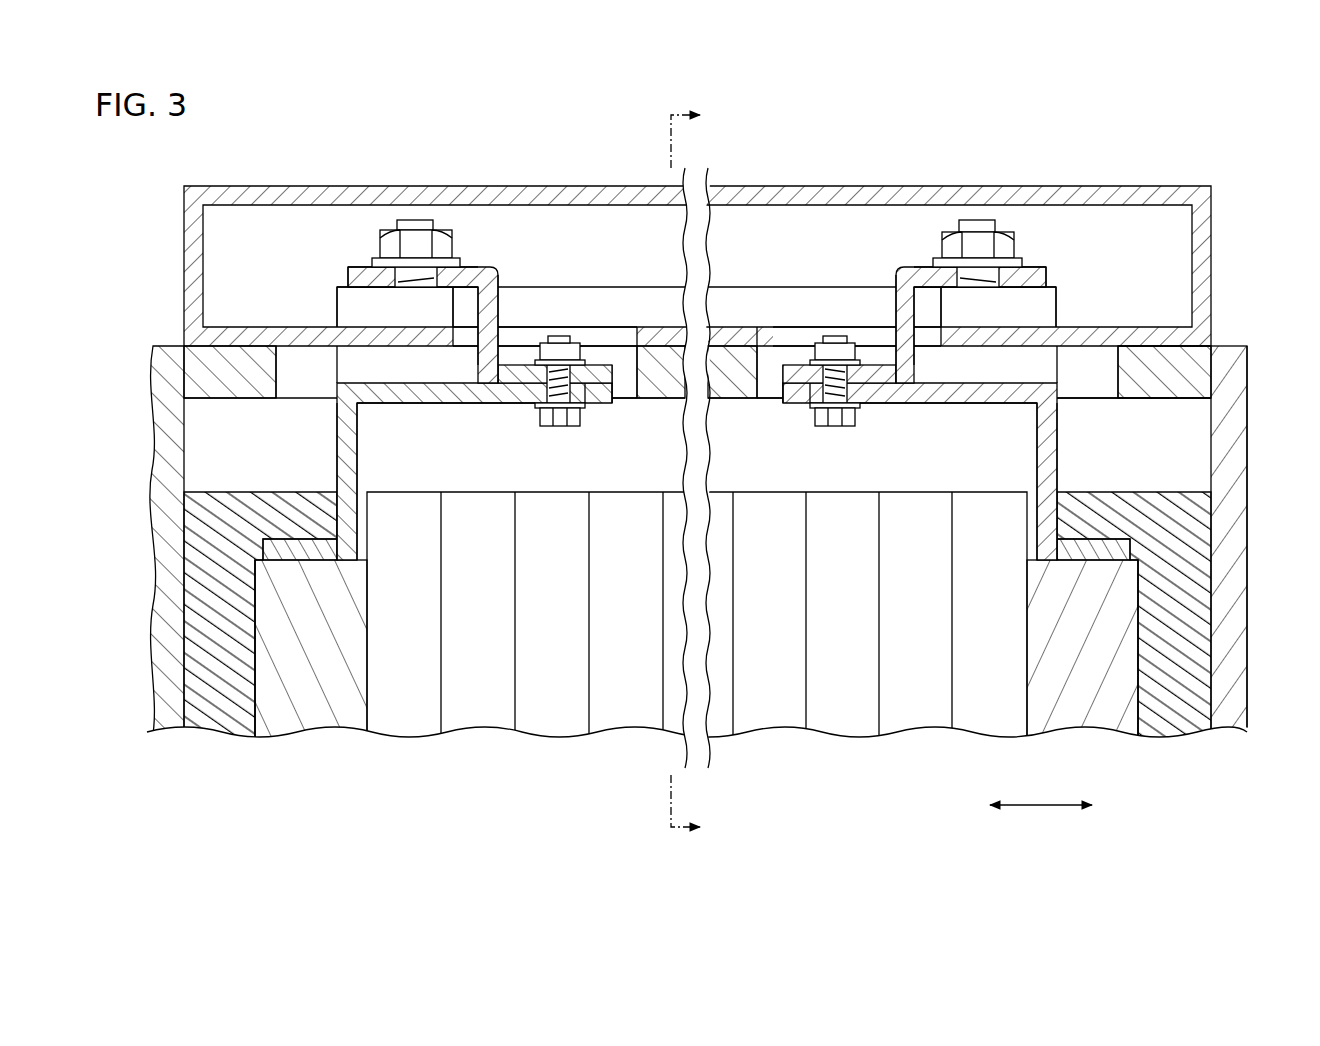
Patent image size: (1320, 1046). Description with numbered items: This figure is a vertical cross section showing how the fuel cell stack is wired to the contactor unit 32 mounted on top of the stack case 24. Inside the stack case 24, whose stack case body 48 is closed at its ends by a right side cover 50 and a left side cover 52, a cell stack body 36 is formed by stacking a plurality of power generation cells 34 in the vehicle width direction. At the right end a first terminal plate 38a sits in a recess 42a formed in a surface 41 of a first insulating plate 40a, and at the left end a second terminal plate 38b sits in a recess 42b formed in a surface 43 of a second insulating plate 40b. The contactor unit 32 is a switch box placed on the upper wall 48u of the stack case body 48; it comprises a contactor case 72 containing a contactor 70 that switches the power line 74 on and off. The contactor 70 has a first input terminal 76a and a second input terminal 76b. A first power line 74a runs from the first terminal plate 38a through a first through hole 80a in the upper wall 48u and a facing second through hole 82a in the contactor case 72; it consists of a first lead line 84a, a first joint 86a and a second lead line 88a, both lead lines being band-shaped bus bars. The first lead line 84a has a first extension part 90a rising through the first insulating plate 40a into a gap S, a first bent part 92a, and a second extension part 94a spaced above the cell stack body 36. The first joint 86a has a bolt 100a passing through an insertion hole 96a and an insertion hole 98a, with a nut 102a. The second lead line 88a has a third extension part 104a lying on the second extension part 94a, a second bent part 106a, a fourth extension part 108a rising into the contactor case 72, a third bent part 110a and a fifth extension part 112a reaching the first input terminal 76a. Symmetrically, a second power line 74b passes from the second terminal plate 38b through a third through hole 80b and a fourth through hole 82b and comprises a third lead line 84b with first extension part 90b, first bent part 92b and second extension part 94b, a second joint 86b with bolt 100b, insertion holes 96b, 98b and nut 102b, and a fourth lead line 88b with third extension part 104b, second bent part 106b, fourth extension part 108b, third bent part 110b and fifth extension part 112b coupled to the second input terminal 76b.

The stack case 24 is at (1262, 543).
The contactor unit 32 is at (703, 471).
The power generation cells 34 is at (696, 638).
The cell stack body 36 is at (697, 652).
The first terminal plate 38a is at (1054, 650).
The second terminal plate 38b is at (342, 650).
The first insulating plate 40a is at (1178, 616).
The second insulating plate 40b is at (215, 616).
The surface 41 is at (1051, 547).
The recess 42a is at (1054, 650).
The recess 42b is at (342, 650).
The surface 43 is at (343, 547).
The stack case body 48 is at (747, 371).
The upper wall 48u is at (1214, 369).
The right side cover 50 is at (1266, 543).
The left side cover 52 is at (140, 543).
The contactor 70 is at (696, 269).
The contactor case 72 is at (697, 244).
The power line 74 is at (696, 233).
The first power line 74a is at (961, 233).
The second power line 74b is at (428, 233).
The first input terminal 76a is at (977, 203).
The second input terminal 76b is at (416, 203).
The first through hole 80a is at (752, 397).
The third through hole 80b is at (640, 397).
The second through hole 82a is at (849, 299).
The fourth through hole 82b is at (545, 301).
The first lead line 84a is at (907, 471).
The third lead line 84b is at (487, 471).
The first joint 86a is at (887, 446).
The second joint 86b is at (507, 446).
The second lead line 88a is at (947, 303).
The fourth lead line 88b is at (444, 303).
The first extension part 90a is at (1013, 481).
The first extension part 90b is at (382, 481).
The first bent part 92a is at (1087, 372).
The first bent part 92b is at (306, 372).
The second extension part 94a is at (948, 426).
The second extension part 94b is at (446, 426).
The insertion hole 96a is at (835, 438).
The insertion hole 96b is at (560, 438).
The insertion hole 98a is at (784, 417).
The insertion hole 98b is at (611, 417).
The bolt 100a is at (865, 446).
The bolt 100b is at (529, 446).
The nut 102a is at (862, 396).
The nut 102b is at (531, 396).
The third extension part 104a is at (870, 391).
The third extension part 104b is at (524, 391).
The second bent part 106a is at (885, 369).
The second bent part 106b is at (505, 369).
The fourth extension part 108a is at (872, 329).
The fourth extension part 108b is at (519, 329).
The third bent part 110a is at (967, 255).
The third bent part 110b is at (424, 255).
The fifth extension part 112a is at (1050, 255).
The fifth extension part 112b is at (340, 255).
The gap S is at (1172, 441).